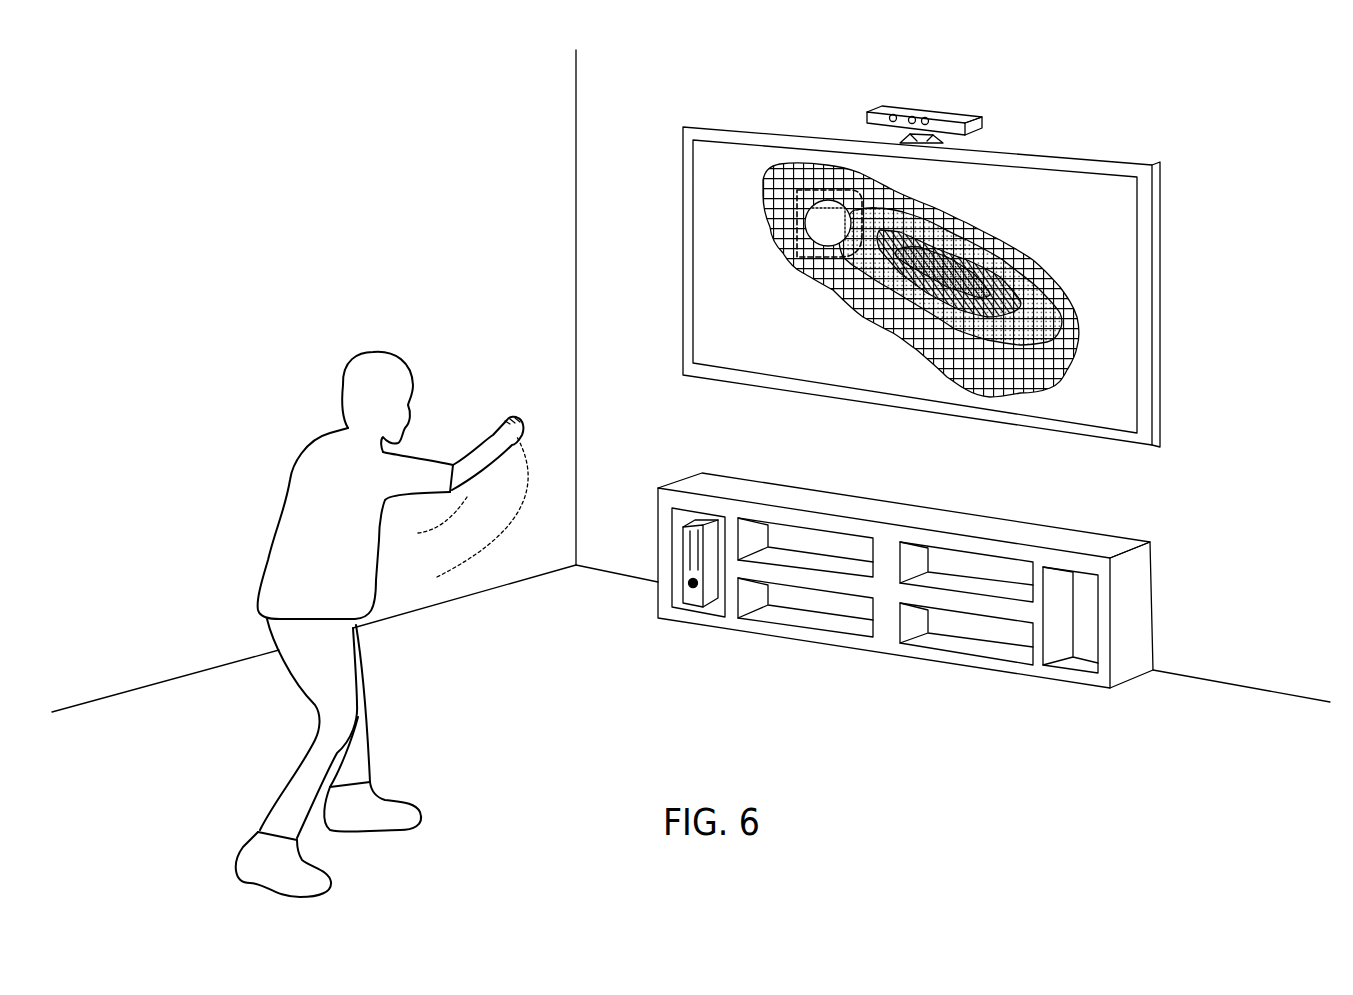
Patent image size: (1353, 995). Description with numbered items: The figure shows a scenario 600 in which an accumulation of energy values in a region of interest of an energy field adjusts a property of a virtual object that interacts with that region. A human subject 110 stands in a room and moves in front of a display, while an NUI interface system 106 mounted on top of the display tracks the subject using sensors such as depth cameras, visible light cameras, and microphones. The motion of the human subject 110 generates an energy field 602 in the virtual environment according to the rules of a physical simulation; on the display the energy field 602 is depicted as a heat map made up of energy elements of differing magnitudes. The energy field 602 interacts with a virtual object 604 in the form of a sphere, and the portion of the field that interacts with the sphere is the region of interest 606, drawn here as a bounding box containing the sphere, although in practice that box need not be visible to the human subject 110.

The scenario 600 is at (402, 135).
The human subject 110 is at (347, 555).
The NUI interface system 106 is at (967, 113).
The energy field 602 is at (970, 223).
The virtual object 604 is at (795, 215).
The region of interest 606 is at (792, 245).